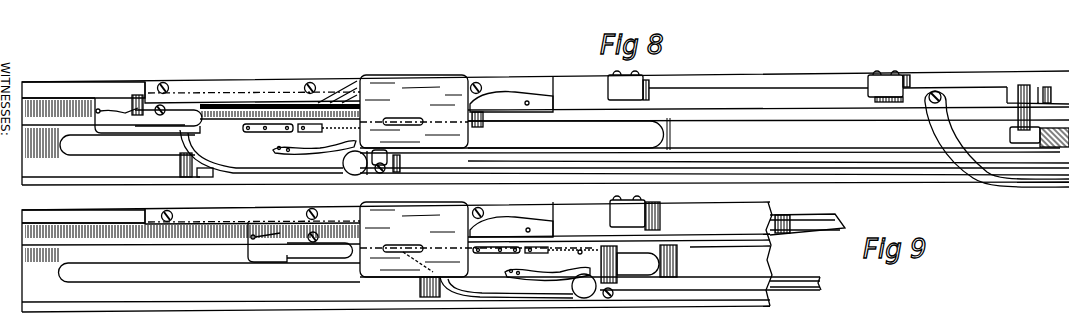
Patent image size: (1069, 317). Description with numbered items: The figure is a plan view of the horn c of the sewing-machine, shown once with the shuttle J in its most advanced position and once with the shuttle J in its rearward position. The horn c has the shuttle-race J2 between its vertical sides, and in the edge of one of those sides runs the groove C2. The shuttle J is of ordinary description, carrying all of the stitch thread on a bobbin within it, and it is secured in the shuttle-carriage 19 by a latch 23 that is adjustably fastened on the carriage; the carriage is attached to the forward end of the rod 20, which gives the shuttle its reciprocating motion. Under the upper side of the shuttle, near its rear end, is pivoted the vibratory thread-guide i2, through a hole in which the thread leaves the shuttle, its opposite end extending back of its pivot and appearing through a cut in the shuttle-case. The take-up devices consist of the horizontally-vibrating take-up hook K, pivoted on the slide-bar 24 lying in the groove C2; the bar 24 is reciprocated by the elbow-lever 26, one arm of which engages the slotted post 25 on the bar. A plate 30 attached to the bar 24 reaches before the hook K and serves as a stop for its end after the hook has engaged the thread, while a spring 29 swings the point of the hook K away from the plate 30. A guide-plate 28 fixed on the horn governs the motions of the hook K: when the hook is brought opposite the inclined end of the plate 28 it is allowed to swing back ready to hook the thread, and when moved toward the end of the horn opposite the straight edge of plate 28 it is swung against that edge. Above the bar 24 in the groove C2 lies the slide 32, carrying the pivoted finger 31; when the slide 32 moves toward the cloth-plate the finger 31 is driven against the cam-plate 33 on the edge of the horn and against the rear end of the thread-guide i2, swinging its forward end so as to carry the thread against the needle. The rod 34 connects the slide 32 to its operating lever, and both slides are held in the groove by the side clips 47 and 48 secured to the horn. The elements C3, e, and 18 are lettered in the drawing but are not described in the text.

In FIG. 8, the groove C2 is at (55, 105).
In FIG. 9, the groove C2 is at (83, 224).
In FIG. 8, the guide-plate 28 is at (260, 88).
In FIG. 9, the guide-plate 28 is at (247, 215).
In FIG. 8, the plate 30 is at (147, 114).
In FIG. 9, the plate 30 is at (267, 242).
In FIG. 8, the take-up hook K is at (178, 105).
In FIG. 9, the take-up hook K is at (343, 216).
In FIG. 8, the spring 29 is at (115, 107).
In FIG. 8, the slot C3 is at (127, 145).
In FIG. 9, the slot C3 is at (210, 272).
In FIG. 8, the shuttle J is at (261, 151).
In FIG. 9, the shuttle J is at (496, 281).
In FIG. 9, the shuttle-race J2 is at (396, 291).
In FIG. 8, the vibratory thread-guide i2 is at (301, 139).
In FIG. 9, the vibratory thread-guide i2 is at (593, 252).
In FIG. 8, the shuttle-carriage 19 is at (200, 165).
In FIG. 9, the shuttle-carriage 19 is at (639, 264).
In FIG. 8, the latch 23 is at (371, 162).
In FIG. 9, the latch 23 is at (592, 286).
In FIG. 8, the slide plate e is at (414, 111).
In FIG. 9, the slide plate e is at (476, 239).
In FIG. 9, the pin 18 is at (437, 287).
In FIG. 8, the cam-plate 33 is at (473, 83).
In FIG. 9, the cam-plate 33 is at (477, 208).
In FIG. 8, the pivoted finger 31 is at (513, 97).
In FIG. 9, the pivoted finger 31 is at (500, 222).
In FIG. 8, the rod 20 is at (468, 158).
In FIG. 9, the rod 20 is at (797, 291).
In FIG. 8, the side clip 47 is at (628, 85).
In FIG. 9, the side clip 47 is at (635, 213).
In FIG. 8, the slide 32 is at (758, 97).
In FIG. 8, the side clip 48 is at (889, 86).
In FIG. 8, the rod 34 is at (1030, 190).
In FIG. 8, the slotted post 25 is at (1015, 87).
In FIG. 8, the elbow-lever 26 is at (1010, 137).
In FIG. 8, the slide-bar 24 is at (1020, 95).
In FIG. 9, the slide-bar 24 is at (807, 218).
In FIG. 9, the horn c is at (733, 254).